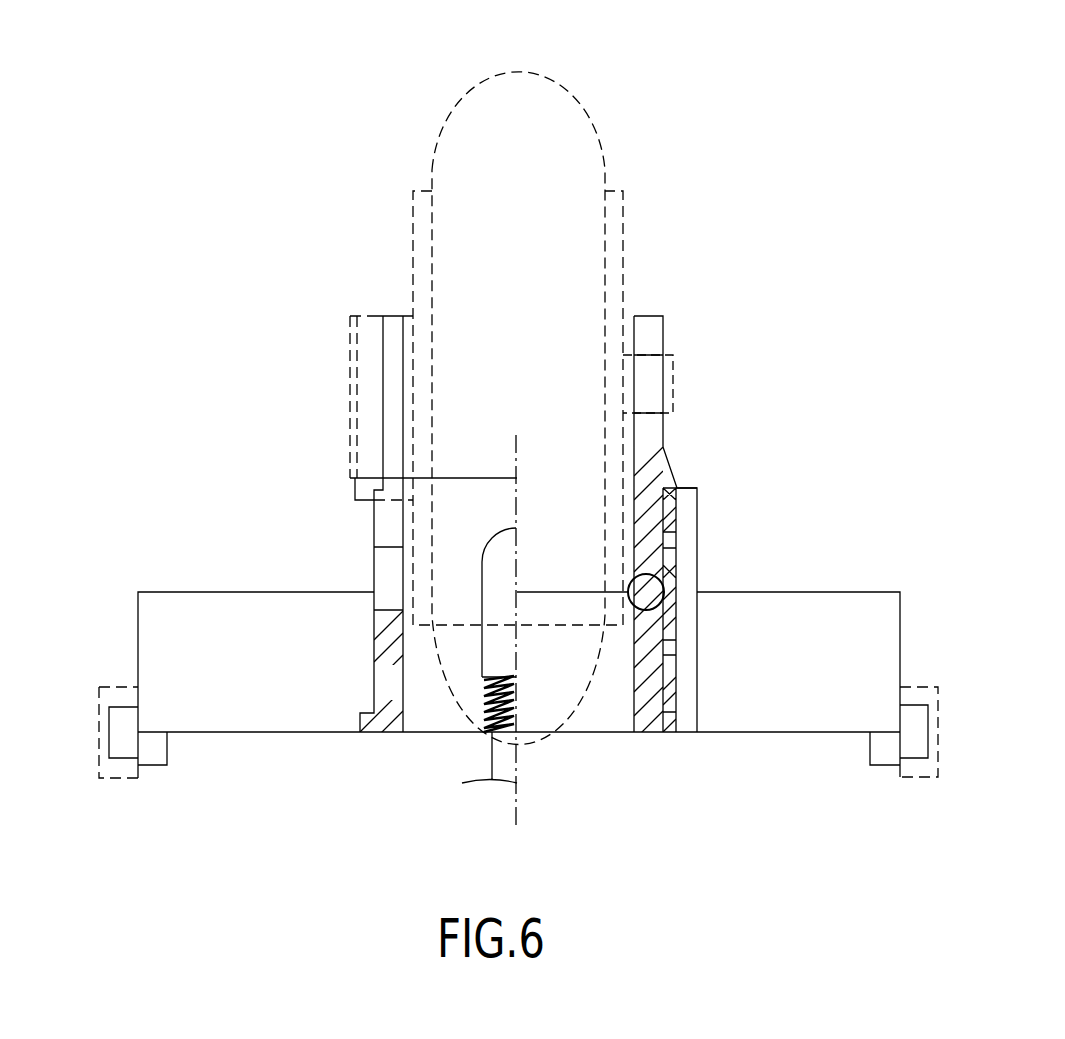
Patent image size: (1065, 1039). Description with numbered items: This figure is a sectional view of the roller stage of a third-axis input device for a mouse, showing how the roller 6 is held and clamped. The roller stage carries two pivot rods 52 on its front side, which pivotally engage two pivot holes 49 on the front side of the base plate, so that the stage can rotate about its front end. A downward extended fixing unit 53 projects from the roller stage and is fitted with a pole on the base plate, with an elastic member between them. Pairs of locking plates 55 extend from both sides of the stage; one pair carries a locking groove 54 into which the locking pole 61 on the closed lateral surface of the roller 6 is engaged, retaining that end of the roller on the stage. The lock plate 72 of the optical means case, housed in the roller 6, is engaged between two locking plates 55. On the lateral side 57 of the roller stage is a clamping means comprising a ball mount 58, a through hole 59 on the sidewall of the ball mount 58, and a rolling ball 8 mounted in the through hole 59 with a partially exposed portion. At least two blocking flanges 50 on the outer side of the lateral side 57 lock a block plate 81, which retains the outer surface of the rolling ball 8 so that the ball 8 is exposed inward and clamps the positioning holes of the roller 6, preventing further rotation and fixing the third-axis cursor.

The roller 6 is at (577, 140).
The rolling ball 8 is at (650, 592).
The pivot holes 49 is at (920, 697).
The blocking flanges 50 is at (690, 710).
The pivot rods 52 is at (917, 732).
The downward extended fixing unit 53 is at (497, 655).
The locking groove 54 is at (650, 377).
The locking plates 55 is at (393, 322).
The lateral side 57 is at (650, 690).
The ball mount 58 is at (666, 578).
The through hole 59 is at (633, 573).
The locking pole 61 is at (673, 385).
The lock plate 72 is at (367, 413).
The block plate 81 is at (675, 488).